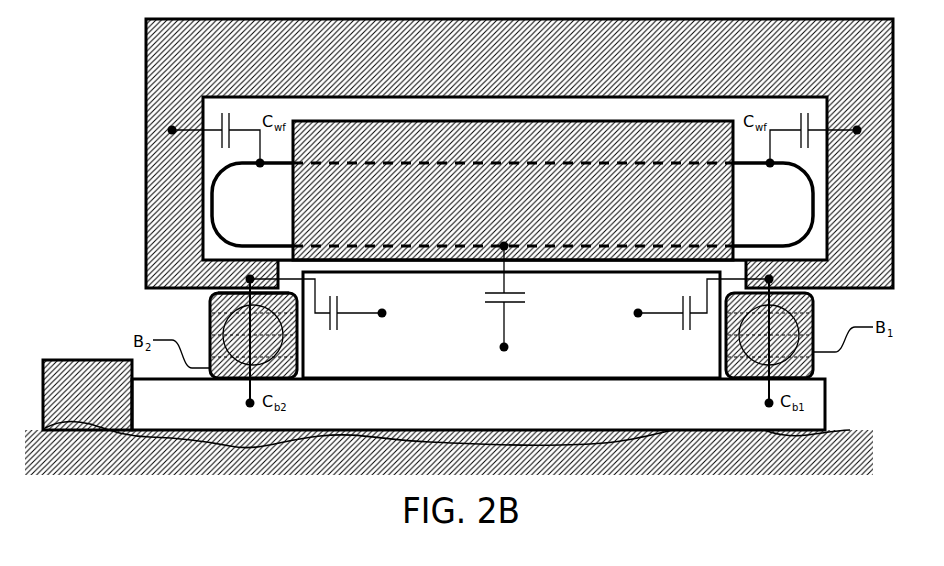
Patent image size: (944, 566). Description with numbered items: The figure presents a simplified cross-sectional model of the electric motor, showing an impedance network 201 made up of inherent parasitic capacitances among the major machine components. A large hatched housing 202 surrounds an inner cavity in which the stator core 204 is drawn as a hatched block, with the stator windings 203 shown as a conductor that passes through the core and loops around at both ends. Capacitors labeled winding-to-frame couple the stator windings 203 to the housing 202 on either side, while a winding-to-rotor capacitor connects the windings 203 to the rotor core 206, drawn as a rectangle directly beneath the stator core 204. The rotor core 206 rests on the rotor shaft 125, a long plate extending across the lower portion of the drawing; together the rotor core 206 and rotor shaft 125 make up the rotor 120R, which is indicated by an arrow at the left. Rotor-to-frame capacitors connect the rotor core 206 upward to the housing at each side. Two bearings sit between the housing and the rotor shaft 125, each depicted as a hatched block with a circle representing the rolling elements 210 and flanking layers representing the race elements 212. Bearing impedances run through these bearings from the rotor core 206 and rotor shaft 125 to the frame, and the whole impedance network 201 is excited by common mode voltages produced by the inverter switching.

The frame / housing block 202 is at (523, 66).
The stator windings 203 is at (217, 222).
The stator core 204 is at (516, 209).
The impedance network 201 is at (565, 163).
The rotor core 206 is at (583, 341).
The rotor shaft 125 is at (508, 419).
The rolling elements 210 is at (210, 337).
The race elements 212 is at (208, 296).
The rotor 120R is at (100, 321).